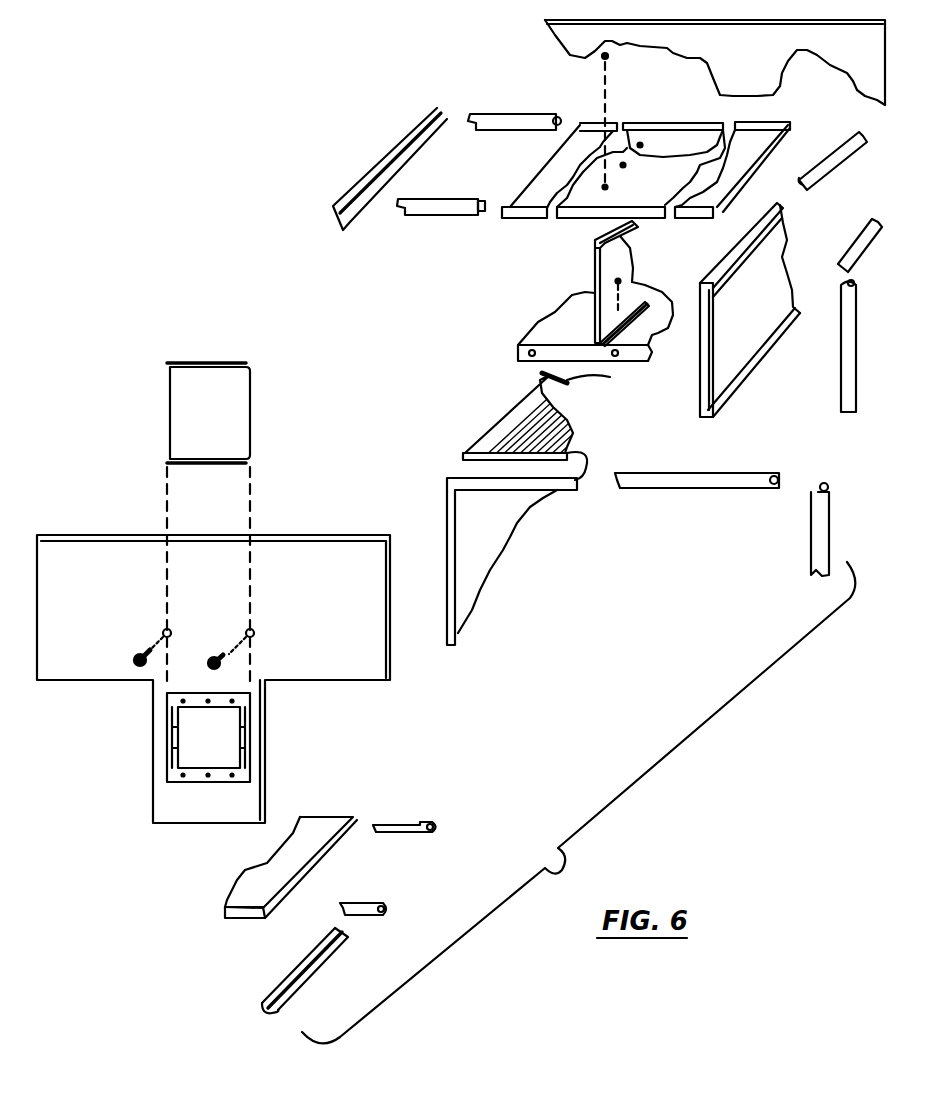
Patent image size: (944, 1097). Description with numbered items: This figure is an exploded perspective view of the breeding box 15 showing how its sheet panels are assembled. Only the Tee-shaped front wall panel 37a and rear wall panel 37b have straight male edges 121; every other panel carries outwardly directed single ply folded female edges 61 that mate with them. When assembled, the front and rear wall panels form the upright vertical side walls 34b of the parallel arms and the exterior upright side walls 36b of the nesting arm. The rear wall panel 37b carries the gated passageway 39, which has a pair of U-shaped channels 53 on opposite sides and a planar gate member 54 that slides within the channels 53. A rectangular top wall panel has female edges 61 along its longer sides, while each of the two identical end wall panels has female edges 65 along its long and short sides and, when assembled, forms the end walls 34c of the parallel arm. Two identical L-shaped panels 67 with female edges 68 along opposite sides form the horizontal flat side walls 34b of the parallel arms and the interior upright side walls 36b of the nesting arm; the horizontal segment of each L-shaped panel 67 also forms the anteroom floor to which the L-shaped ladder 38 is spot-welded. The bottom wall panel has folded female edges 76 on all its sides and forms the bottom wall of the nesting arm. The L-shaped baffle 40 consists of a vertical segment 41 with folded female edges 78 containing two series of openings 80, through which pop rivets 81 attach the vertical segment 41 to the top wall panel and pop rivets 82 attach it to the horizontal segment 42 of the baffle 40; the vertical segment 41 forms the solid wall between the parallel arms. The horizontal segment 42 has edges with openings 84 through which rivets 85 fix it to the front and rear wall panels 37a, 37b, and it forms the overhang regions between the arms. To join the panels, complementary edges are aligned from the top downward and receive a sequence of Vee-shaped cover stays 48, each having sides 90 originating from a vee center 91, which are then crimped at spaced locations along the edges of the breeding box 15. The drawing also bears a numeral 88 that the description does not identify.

The breeding box 15 is at (305, 85).
The front wall panel 37a is at (729, 54).
The pop rivets 81 is at (604, 60).
The sides 90 is at (405, 137).
The Vee-shaped cover stays 48 is at (498, 113).
The vee center 91 is at (482, 200).
The folded (female) edges 61 is at (636, 123).
The single ply (female) edges 65 is at (730, 256).
The end walls 34c is at (740, 342).
The L-shaped baffle 40 is at (545, 292).
The vertical segment 41 is at (593, 270).
The folded (female) edges 78 is at (602, 243).
The openings 80 is at (632, 229).
The pop rivets 82 is at (622, 279).
The horizontal segment 42 is at (543, 335).
The openings 84 is at (520, 353).
The end portion 88 is at (645, 358).
The L-shaped ladder 38 is at (507, 412).
The upright side walls of the nesting arm 36b is at (467, 565).
The side walls of the parallel arms 34b is at (483, 471).
The L-shaped panels 67 is at (523, 526).
The single ply (female) edges 68 is at (447, 598).
The planar gate member 54 is at (244, 432).
The straight (male) edges 121 is at (362, 535).
The rear wall panel 37b is at (352, 656).
The rivets 85 is at (139, 655).
The gated passageway 39 is at (253, 758).
The U-shaped channels 53 is at (167, 750).
The folded (female) edges 76 is at (309, 868).